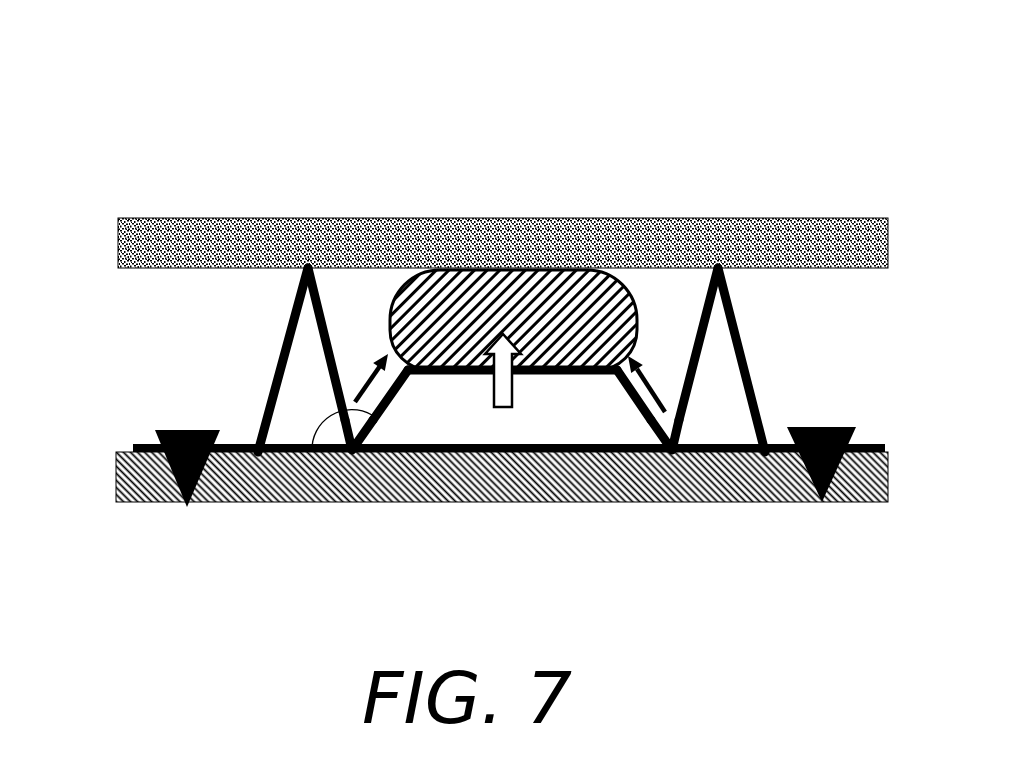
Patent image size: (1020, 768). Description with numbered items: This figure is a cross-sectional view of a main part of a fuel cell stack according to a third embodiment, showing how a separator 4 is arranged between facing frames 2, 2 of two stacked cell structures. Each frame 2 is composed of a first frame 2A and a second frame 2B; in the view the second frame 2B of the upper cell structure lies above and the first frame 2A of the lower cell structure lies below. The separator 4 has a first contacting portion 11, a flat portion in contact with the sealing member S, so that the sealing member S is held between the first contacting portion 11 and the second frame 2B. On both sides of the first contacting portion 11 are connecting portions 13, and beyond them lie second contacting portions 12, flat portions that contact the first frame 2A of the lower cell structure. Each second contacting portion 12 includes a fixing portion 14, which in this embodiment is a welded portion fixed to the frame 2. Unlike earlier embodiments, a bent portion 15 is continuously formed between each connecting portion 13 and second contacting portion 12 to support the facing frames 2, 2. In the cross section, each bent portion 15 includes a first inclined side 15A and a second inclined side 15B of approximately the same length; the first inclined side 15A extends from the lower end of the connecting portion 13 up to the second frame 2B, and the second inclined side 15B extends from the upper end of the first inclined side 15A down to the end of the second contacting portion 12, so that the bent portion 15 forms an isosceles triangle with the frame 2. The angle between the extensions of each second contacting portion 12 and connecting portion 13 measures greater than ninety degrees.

The frame 2 is at (464, 363).
The first frame 2A is at (128, 473).
The second frame 2B is at (118, 240).
The separator 4 is at (885, 443).
The first contacting portion 11 is at (556, 382).
The second contacting portion 12 is at (242, 460).
The connecting portion 13 is at (400, 397).
The fixing portion 14 is at (162, 430).
The bent portion 15 is at (512, 232).
The first inclined side 15A is at (331, 318).
The second inclined side 15B is at (283, 336).
The sealing member S is at (510, 268).